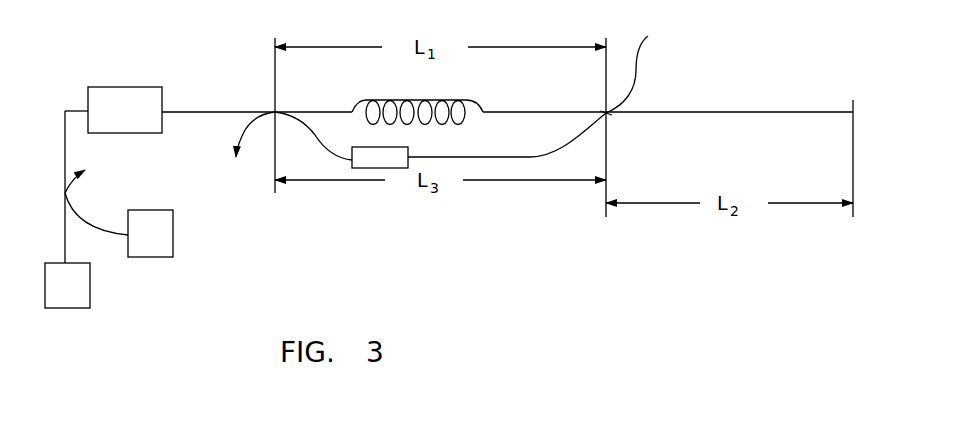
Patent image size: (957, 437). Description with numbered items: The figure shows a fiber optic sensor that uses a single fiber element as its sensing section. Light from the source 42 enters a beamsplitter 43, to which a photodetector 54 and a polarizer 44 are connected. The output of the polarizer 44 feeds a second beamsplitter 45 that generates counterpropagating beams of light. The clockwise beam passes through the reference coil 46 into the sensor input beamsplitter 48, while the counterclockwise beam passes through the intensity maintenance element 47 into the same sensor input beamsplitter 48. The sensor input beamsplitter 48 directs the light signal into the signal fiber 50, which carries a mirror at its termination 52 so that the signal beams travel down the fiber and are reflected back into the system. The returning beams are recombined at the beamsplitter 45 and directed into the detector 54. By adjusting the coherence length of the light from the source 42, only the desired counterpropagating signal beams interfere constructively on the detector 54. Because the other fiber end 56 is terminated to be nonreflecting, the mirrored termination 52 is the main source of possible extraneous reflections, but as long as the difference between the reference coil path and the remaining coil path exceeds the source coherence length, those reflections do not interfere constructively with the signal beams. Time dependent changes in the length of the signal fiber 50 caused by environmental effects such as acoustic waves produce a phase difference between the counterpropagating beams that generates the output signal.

The source 42 is at (77, 291).
The beamsplitter 43 is at (65, 193).
The polarizer 44 is at (137, 89).
The second beamsplitter 45 is at (275, 112).
The reference coil 46 is at (430, 99).
The intensity maintenance element 47 is at (398, 168).
The sensor input beamsplitter 48 is at (608, 116).
The signal fiber 50 is at (729, 112).
The termination 52 is at (853, 112).
The photodetector 54 is at (173, 245).
The end 56 is at (630, 66).